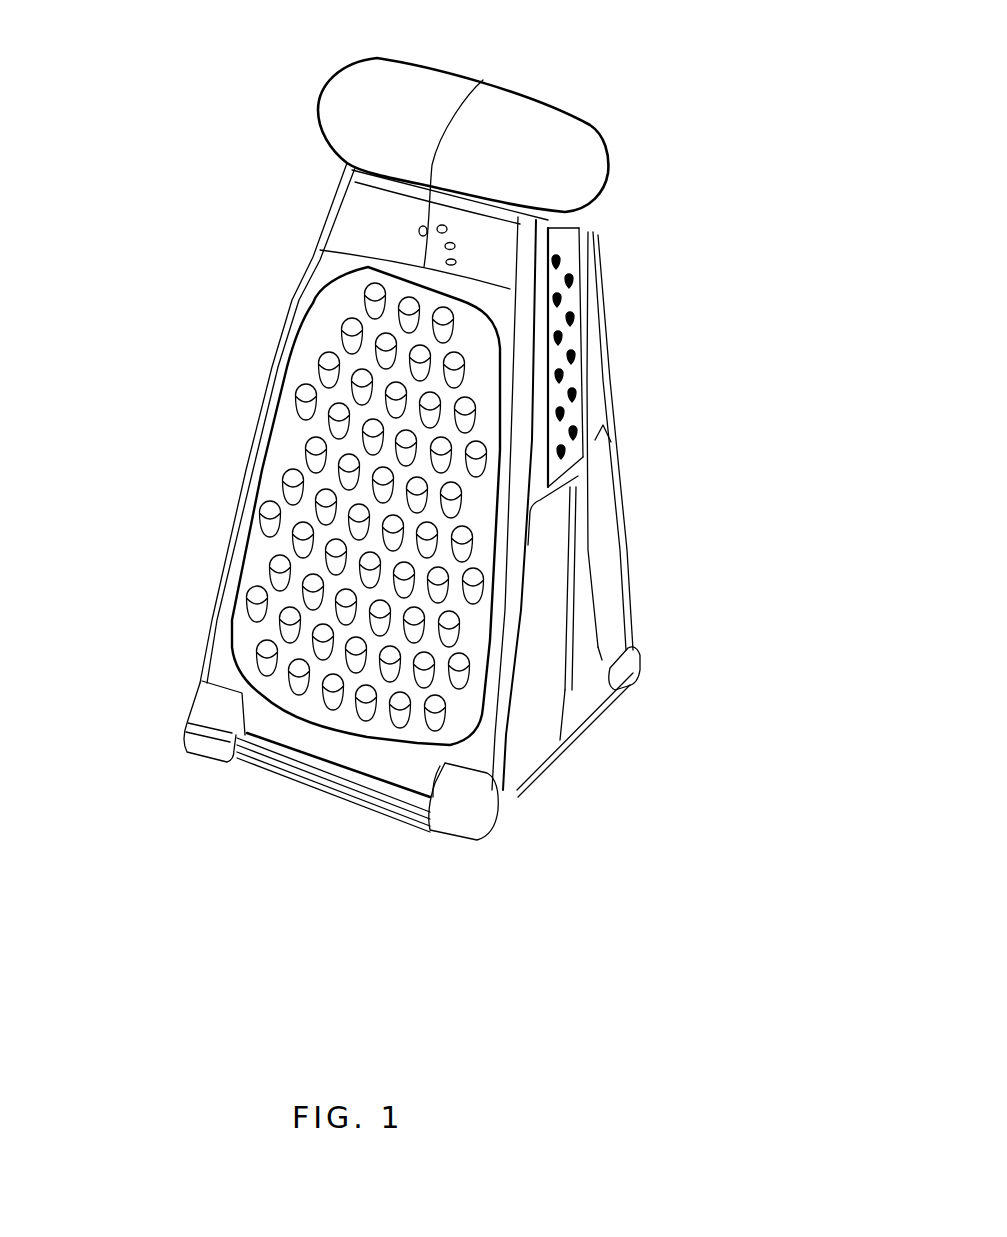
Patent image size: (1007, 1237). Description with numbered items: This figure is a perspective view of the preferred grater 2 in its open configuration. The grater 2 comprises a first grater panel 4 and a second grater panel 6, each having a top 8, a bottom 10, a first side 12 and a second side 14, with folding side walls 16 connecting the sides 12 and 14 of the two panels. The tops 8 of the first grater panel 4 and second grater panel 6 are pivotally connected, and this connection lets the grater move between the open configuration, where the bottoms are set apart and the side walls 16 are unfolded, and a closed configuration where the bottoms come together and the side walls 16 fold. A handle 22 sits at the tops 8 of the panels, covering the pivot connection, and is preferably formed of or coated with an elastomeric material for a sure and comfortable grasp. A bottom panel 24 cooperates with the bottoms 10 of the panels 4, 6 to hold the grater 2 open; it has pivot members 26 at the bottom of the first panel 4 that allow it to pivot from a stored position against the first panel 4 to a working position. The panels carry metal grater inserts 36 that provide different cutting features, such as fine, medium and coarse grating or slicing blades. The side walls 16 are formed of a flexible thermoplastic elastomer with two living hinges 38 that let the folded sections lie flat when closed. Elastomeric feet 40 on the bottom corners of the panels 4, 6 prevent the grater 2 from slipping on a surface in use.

The grater 2 is at (712, 128).
The first grater panel 4 is at (330, 317).
The second grater panel 6 is at (568, 338).
The top 8 is at (377, 208).
The bottom 10 is at (320, 732).
The first side 12 is at (253, 488).
The second side 14 is at (510, 503).
The folding side walls 16 is at (598, 588).
The handle 22 is at (508, 133).
The bottom panel 24 is at (600, 715).
The pivot members 26 is at (332, 788).
The grater inserts 36 is at (470, 410).
The living hinges 38 is at (595, 642).
The feet 40 is at (205, 752).